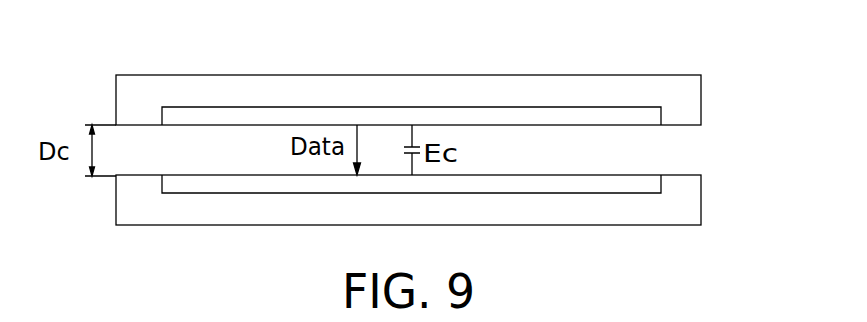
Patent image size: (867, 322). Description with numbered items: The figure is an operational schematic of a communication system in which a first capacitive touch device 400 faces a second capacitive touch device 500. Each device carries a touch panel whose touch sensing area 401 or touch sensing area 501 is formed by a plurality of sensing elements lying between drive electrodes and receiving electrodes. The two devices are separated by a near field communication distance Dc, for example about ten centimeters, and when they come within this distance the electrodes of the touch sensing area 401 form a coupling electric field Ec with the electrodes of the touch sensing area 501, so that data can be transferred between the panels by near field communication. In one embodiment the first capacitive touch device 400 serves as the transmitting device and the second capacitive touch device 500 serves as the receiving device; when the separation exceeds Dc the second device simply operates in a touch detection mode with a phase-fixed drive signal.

The first capacitive touch device 400 is at (701, 101).
The touch sensing area 401 is at (181, 107).
The second capacitive touch device 500 is at (701, 200).
The touch sensing area 501 is at (200, 193).